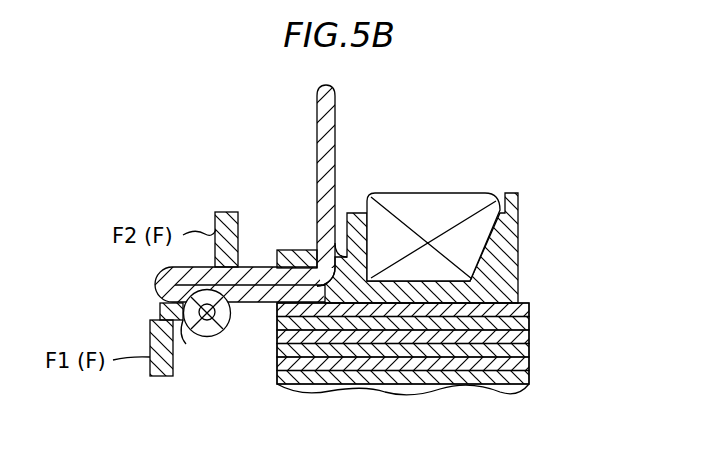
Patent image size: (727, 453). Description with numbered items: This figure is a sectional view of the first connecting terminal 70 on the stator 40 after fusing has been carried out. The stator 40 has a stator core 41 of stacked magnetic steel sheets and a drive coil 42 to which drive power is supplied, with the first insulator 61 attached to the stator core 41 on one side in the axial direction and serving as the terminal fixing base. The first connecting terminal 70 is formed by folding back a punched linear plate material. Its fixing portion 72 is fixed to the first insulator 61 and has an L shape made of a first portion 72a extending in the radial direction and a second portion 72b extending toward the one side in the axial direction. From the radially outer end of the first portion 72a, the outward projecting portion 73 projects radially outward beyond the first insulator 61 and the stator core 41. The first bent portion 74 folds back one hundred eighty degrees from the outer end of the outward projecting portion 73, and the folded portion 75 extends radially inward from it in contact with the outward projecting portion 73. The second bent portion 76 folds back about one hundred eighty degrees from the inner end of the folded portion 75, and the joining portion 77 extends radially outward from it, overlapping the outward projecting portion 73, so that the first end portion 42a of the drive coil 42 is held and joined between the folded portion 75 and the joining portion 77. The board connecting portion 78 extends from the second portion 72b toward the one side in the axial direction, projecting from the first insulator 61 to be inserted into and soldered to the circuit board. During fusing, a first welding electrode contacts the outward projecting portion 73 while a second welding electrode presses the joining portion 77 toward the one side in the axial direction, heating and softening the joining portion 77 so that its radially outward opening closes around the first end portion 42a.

The stator 40 is at (593, 157).
The stator core 41 is at (530, 346).
The drive coil 42 is at (432, 202).
The first end portion 42a is at (212, 338).
The first insulator 61 is at (518, 252).
The first connecting terminal 70 is at (297, 175).
The fixing portion 72 is at (256, 217).
The first portion 72a is at (283, 252).
The second portion 72b is at (303, 262).
The outward projecting portion 73 is at (238, 292).
The first bent portion 74 is at (158, 277).
The folded portion 75 is at (194, 340).
The second bent portion 76 is at (222, 330).
The joining portion 77 is at (139, 312).
The board connecting portion 78 is at (328, 143).